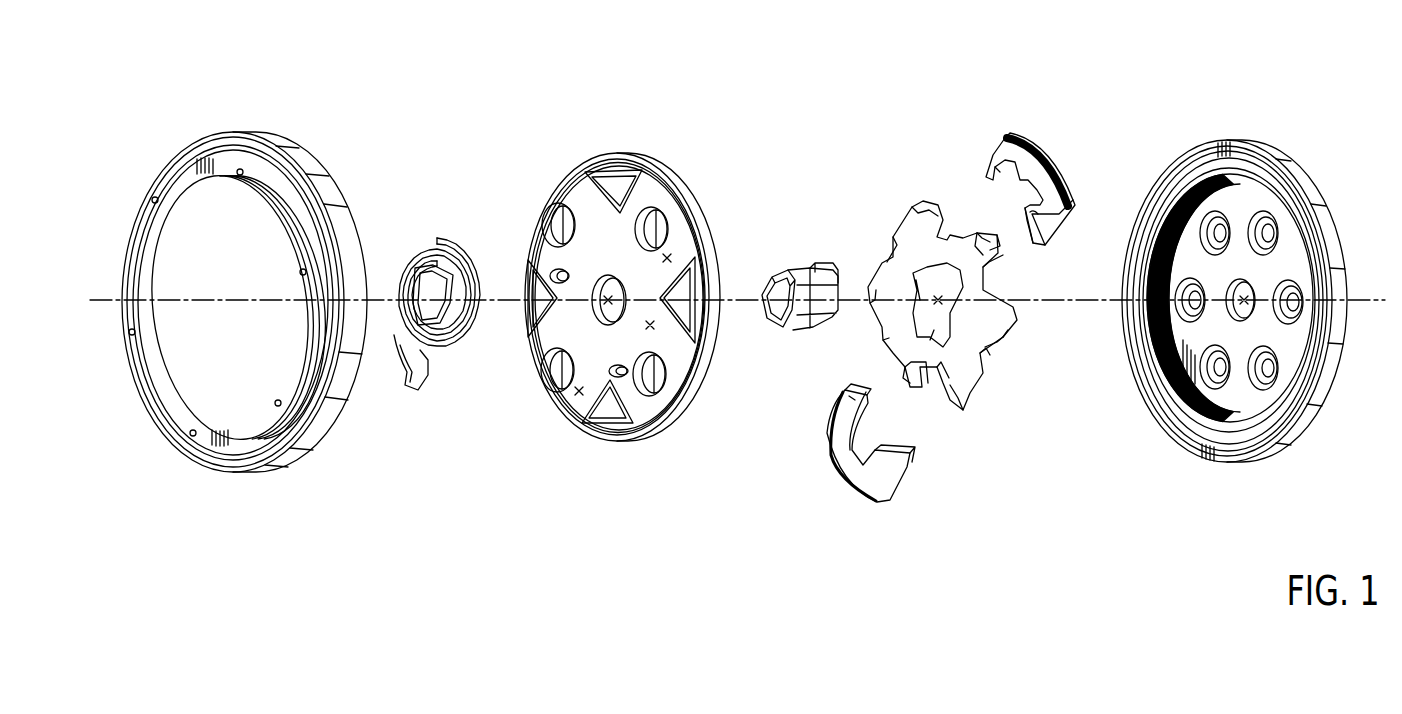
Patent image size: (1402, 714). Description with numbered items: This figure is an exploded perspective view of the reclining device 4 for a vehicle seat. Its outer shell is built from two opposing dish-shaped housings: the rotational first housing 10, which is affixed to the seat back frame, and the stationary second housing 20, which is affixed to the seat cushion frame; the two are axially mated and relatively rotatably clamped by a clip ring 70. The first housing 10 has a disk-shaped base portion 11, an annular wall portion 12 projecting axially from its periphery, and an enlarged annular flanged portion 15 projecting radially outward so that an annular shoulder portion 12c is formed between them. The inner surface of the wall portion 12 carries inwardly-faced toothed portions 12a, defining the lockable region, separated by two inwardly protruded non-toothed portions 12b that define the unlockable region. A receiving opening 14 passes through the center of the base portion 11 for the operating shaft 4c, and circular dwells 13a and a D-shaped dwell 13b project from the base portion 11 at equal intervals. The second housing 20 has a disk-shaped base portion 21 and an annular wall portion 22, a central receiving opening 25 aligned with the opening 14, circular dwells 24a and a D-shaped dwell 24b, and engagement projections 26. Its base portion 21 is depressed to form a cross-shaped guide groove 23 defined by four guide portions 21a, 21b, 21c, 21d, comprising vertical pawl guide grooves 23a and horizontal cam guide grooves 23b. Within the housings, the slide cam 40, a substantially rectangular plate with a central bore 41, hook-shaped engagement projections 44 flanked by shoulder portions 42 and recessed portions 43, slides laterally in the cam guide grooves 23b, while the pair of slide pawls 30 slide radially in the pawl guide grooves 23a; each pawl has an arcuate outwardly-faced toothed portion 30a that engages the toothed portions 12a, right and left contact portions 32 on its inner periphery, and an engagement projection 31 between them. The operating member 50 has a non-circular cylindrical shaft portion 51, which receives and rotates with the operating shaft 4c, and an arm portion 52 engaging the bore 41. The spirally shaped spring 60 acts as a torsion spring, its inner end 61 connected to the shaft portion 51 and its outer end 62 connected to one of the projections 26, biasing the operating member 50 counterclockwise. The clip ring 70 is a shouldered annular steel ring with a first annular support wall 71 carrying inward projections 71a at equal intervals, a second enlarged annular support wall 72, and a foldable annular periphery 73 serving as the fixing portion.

The reclining device 4 is at (1127, 37).
The operating shaft 4c is at (825, 324).
The first housing 10 is at (1300, 198).
The base portion 11 is at (1277, 258).
The annular wall portion 12 is at (1150, 238).
The toothed portions 12a is at (1182, 190).
The non-toothed portions 12b is at (1202, 182).
The annular shoulder portion 12c is at (1228, 178).
The circular engagement projections 13a is at (1267, 215).
The D-shaped engagement projection 13b is at (1182, 312).
The receiving opening 14 is at (1247, 285).
The annular flanged portion 15 is at (1168, 425).
The second housing 20 is at (654, 175).
The base portion 21 is at (655, 272).
The guide portion 21a is at (619, 193).
The guide portion 21b is at (686, 298).
The guide portion 21c is at (548, 298).
The guide portion 21d is at (612, 412).
The annular wall portion 22 is at (653, 428).
The cross-shaped guide groove 23 is at (679, 355).
The pawl guide grooves 23a is at (667, 258).
The cam guide grooves 23b is at (650, 325).
The circular engagement projections 24a is at (552, 226).
The D-shaped engagement projection 24b is at (555, 374).
The receiving opening 25 is at (607, 296).
The engagement projections 26 is at (617, 369).
The slide pawls 30 is at (1004, 134).
The toothed portion 30a is at (1052, 147).
The engagement projection 31 is at (1040, 225).
The contact portions 32 is at (1035, 237).
The slide cam 40 is at (915, 205).
The bore 41 is at (895, 316).
The shoulder portions 42 is at (982, 303).
The recessed portions 43 is at (982, 290).
The engagement projections 44 is at (984, 253).
The operating member 50 is at (812, 320).
The cylindrical shaft portion 51 is at (782, 328).
The arm portion 52 is at (822, 272).
The spring 60 is at (432, 238).
The inner end 61 is at (467, 339).
The outer end 62 is at (419, 395).
The clip ring 70 is at (279, 133).
The first annular support wall 71 is at (155, 403).
The projections 71a is at (240, 175).
The second enlarged annular support wall 72 is at (301, 185).
The foldable annular periphery 73 is at (340, 222).